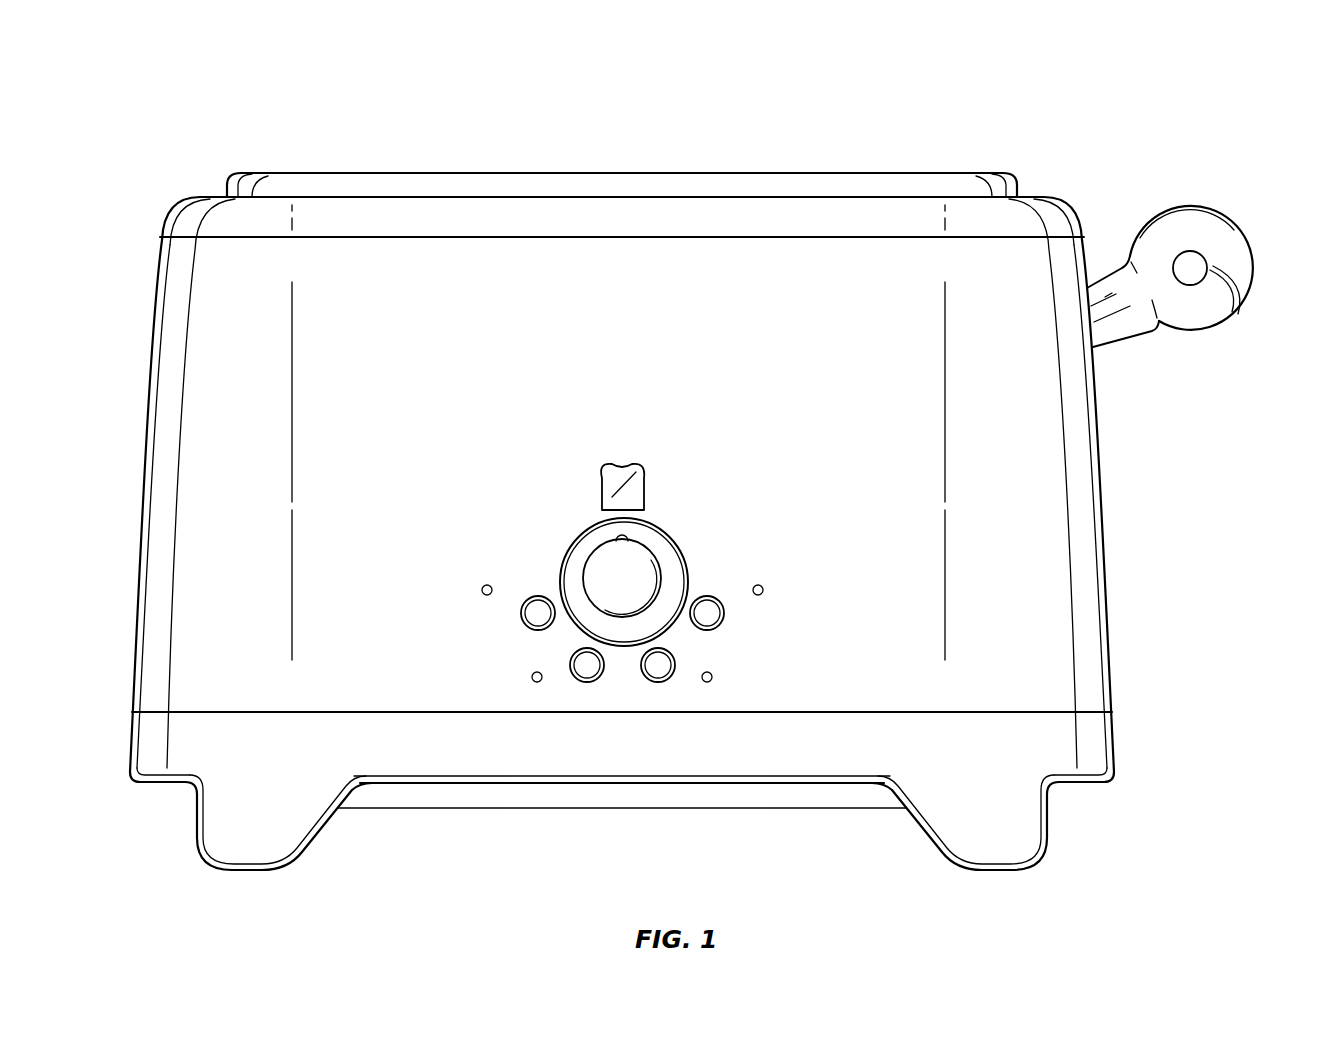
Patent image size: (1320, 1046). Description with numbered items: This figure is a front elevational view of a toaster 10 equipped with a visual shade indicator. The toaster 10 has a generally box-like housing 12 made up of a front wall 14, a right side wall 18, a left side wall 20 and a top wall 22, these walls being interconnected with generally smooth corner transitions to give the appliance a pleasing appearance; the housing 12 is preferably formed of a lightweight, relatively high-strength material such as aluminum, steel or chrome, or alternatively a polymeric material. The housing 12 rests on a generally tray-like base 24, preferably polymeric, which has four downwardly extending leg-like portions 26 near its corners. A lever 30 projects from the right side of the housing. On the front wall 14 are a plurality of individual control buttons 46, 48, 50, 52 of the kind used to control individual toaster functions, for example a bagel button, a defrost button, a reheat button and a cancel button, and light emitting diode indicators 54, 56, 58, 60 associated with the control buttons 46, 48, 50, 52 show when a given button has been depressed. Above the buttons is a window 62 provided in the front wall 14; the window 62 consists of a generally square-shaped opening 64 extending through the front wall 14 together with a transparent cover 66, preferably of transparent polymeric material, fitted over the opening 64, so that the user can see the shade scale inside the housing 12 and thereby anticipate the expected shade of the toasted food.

The toaster 10 is at (296, 86).
The housing 12 is at (750, 212).
The front wall 14 is at (640, 309).
The right side wall 18 is at (1108, 502).
The left side wall 20 is at (137, 508).
The top wall 22 is at (527, 173).
The base 24 is at (470, 763).
The leg-like portions 26 is at (230, 818).
The carriage lever 30 is at (1199, 228).
The control button 46 is at (525, 622).
The control button 48 is at (581, 660).
The control button 50 is at (663, 672).
The control button 52 is at (720, 622).
The LED indicator 54 is at (484, 585).
The LED indicator 56 is at (531, 678).
The LED indicator 58 is at (713, 678).
The LED indicator 60 is at (762, 585).
The window 62 is at (603, 432).
The opening 64 is at (645, 492).
The cover 66 is at (597, 473).